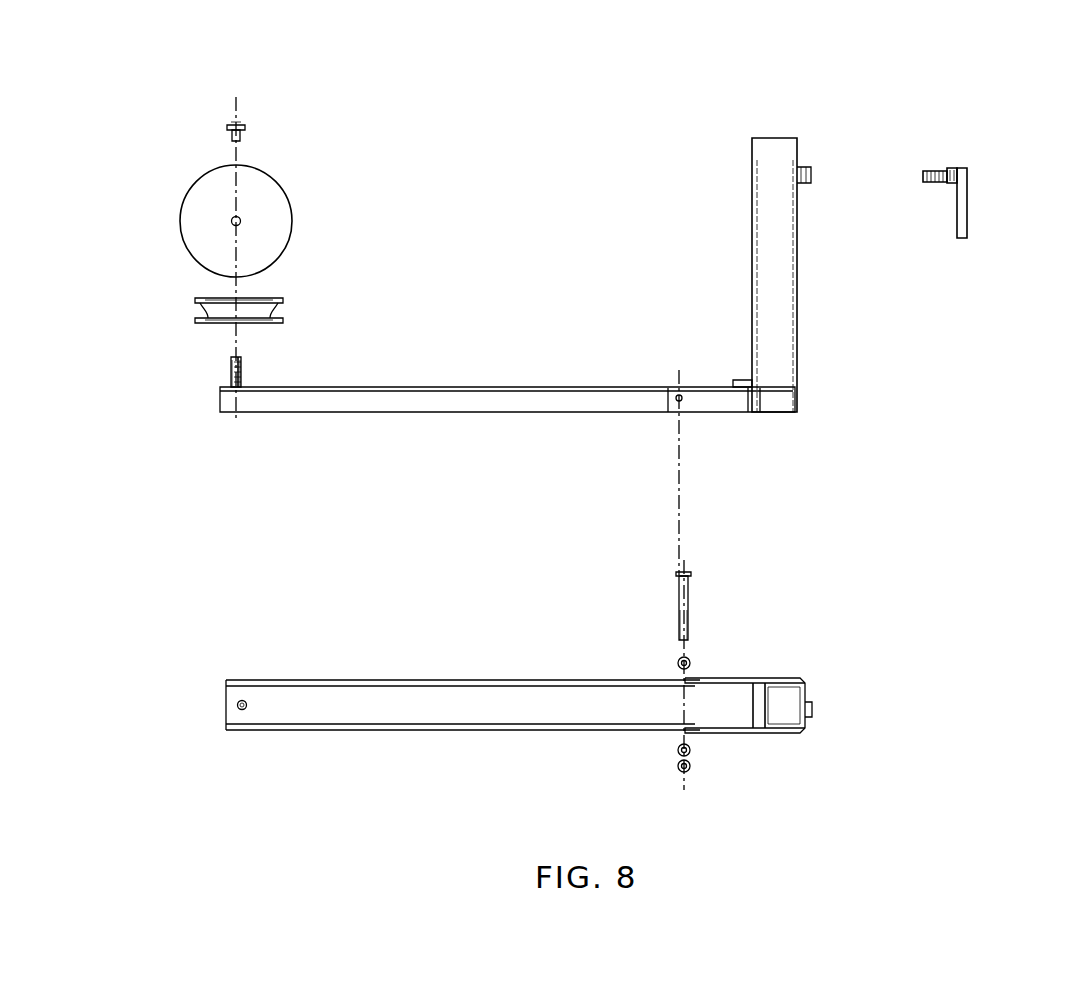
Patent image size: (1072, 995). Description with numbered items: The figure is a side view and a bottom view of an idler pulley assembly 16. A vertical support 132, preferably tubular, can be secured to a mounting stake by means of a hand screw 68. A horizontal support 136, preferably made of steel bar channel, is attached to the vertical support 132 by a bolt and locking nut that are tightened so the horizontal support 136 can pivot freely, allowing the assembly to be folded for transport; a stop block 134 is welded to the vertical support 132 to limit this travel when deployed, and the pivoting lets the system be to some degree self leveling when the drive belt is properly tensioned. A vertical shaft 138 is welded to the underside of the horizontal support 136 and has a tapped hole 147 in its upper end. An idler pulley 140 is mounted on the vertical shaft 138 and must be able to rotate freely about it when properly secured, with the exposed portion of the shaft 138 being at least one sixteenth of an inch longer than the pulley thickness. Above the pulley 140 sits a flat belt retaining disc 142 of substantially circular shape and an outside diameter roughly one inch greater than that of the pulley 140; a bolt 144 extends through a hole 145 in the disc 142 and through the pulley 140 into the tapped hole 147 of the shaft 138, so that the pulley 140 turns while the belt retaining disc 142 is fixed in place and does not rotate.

The idler pulley assembly 16 is at (565, 128).
The hand screw 68 is at (967, 168).
The vertical support 132 is at (797, 306).
The stop block 134 is at (738, 381).
The horizontal support 136 is at (425, 385).
The vertical shaft 138 is at (245, 360).
The idler pulley 140 is at (266, 297).
The belt retaining disc 142 is at (290, 210).
The bolt 144 is at (243, 125).
The hole 145 is at (233, 222).
The tapped hole 147 is at (244, 366).